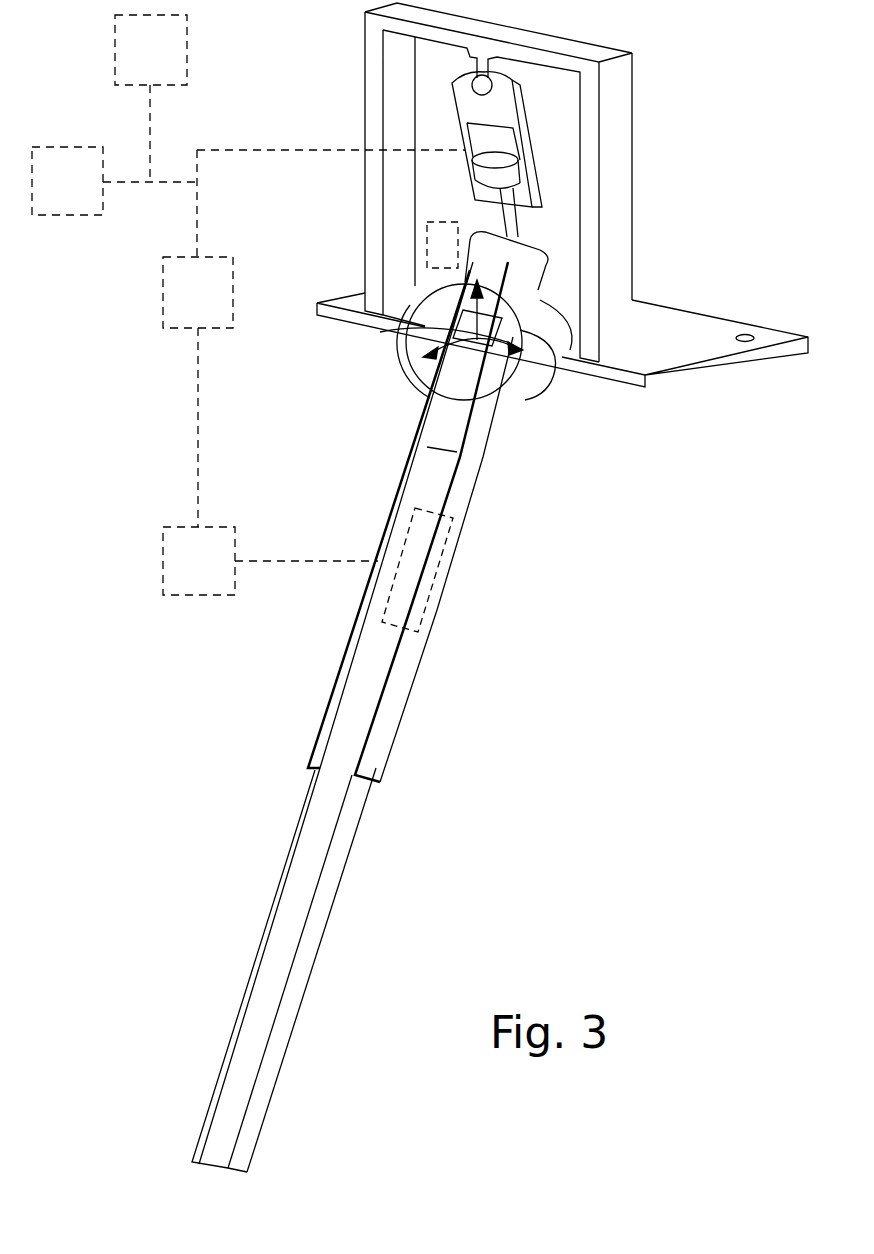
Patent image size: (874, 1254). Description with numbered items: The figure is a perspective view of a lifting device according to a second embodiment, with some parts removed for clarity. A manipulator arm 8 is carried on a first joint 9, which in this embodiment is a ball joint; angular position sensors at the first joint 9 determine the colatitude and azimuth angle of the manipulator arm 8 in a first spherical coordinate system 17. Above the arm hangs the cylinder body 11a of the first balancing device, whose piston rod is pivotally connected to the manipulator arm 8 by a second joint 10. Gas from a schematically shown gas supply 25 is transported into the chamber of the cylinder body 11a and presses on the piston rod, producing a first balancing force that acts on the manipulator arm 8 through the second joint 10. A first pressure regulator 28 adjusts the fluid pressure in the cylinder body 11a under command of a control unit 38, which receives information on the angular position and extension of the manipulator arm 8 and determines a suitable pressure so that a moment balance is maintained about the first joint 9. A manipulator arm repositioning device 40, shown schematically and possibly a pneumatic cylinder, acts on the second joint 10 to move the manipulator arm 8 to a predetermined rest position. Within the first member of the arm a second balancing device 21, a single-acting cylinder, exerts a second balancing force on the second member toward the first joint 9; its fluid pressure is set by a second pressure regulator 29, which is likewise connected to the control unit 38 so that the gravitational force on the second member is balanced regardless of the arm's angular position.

The manipulator arm 8 is at (445, 621).
The first joint 9 is at (518, 413).
The second joint 10 is at (525, 232).
The cylinder body 11a is at (510, 98).
The first spherical coordinate system 17 is at (405, 338).
The second balancing device 21 is at (437, 563).
The gas supply 25 is at (177, 40).
The first pressure regulator 28 is at (85, 197).
The second pressure regulator 29 is at (200, 582).
The control unit 38 is at (212, 308).
The manipulator arm repositioning device 40 is at (427, 245).